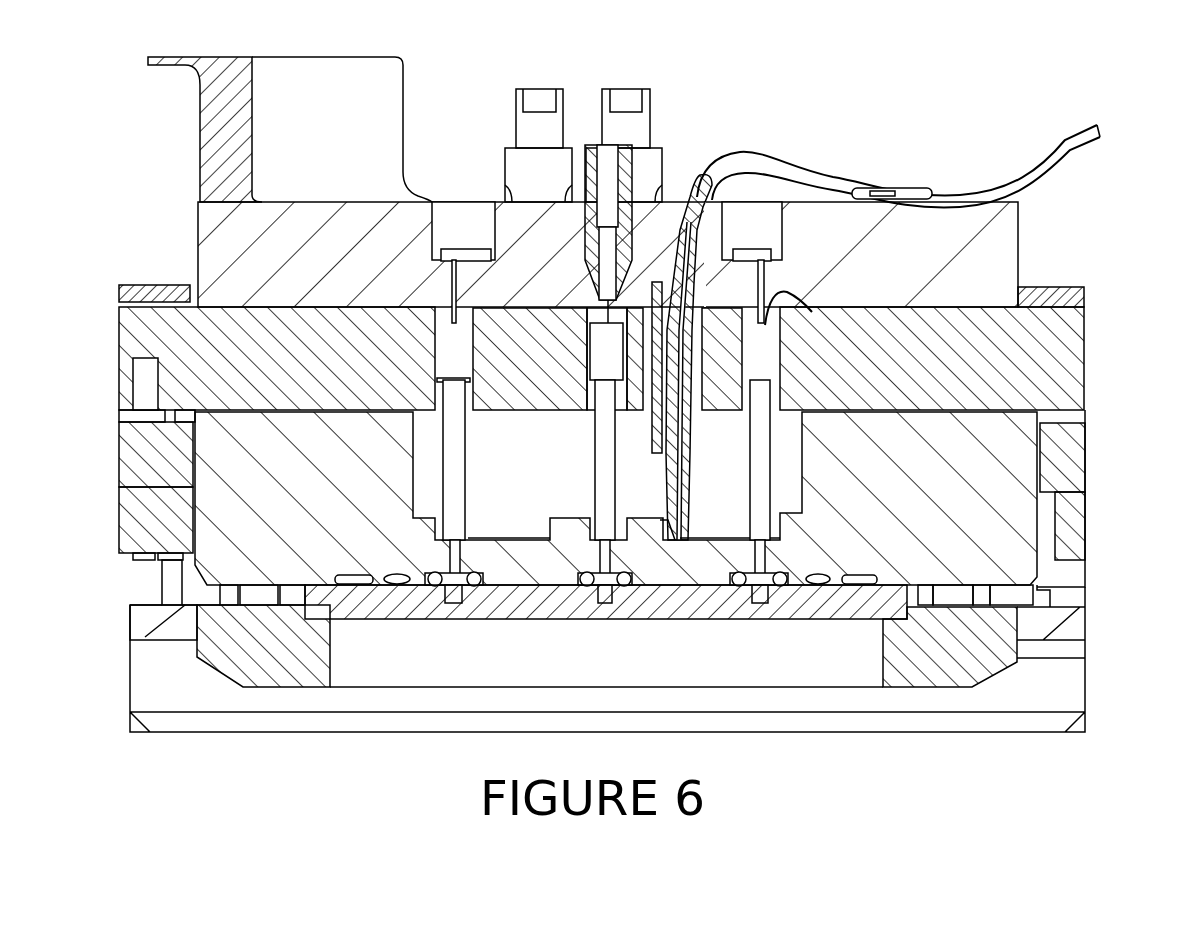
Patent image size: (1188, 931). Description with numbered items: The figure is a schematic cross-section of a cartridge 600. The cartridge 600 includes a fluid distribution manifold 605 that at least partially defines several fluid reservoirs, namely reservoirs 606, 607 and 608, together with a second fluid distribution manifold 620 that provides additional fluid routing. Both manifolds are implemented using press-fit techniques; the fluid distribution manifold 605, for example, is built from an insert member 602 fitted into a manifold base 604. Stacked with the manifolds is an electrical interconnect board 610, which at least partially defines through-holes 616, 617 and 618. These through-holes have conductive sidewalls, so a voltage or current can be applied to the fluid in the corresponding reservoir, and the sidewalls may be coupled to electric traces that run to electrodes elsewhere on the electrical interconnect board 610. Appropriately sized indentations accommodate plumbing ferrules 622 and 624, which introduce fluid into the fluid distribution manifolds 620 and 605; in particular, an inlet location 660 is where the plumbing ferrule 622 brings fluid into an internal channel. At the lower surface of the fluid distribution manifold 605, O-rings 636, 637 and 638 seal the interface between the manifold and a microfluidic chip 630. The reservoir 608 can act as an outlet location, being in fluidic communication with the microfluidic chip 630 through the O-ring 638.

The cartridge 600 is at (1123, 794).
The insert member 602 is at (740, 519).
The manifold base 604 is at (965, 524).
The fluid distribution manifold 605 is at (1093, 415).
The reservoir 606 is at (465, 455).
The reservoir 607 is at (595, 500).
The reservoir 608 is at (800, 437).
The electrical interconnect board 610 is at (1068, 360).
The through-hole 616 is at (473, 355).
The through-hole 617 is at (587, 345).
The through-hole 618 is at (812, 312).
The fluid distribution manifold 620 is at (1003, 243).
The plumbing ferrule 622 is at (697, 322).
The plumbing ferrule 624 is at (632, 178).
The microfluidic chip 630 is at (866, 598).
The O-ring 636 is at (475, 585).
The O-ring 637 is at (628, 585).
The O-ring 638 is at (780, 585).
The inlet location 660 is at (668, 520).